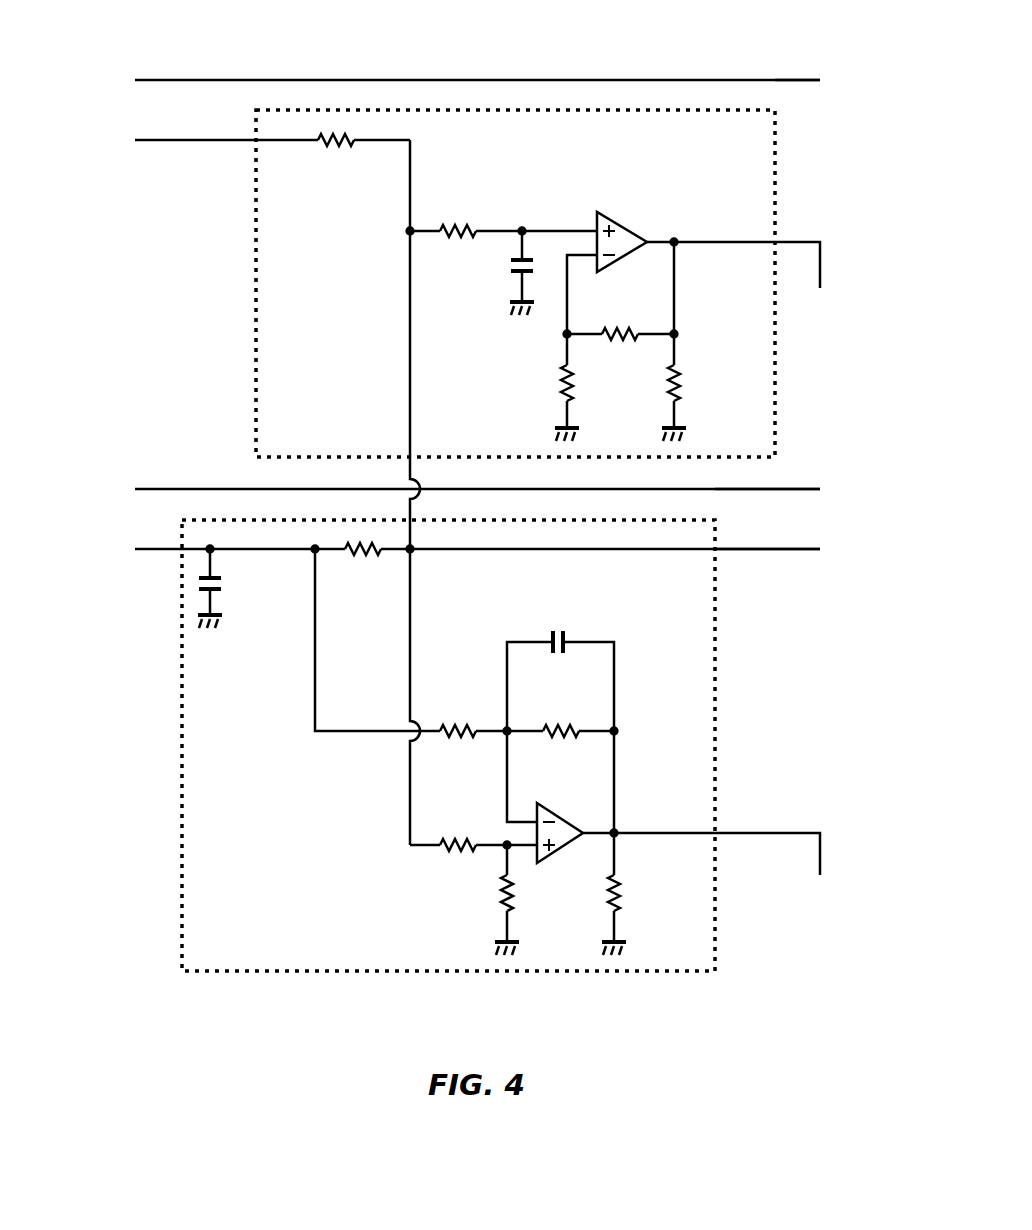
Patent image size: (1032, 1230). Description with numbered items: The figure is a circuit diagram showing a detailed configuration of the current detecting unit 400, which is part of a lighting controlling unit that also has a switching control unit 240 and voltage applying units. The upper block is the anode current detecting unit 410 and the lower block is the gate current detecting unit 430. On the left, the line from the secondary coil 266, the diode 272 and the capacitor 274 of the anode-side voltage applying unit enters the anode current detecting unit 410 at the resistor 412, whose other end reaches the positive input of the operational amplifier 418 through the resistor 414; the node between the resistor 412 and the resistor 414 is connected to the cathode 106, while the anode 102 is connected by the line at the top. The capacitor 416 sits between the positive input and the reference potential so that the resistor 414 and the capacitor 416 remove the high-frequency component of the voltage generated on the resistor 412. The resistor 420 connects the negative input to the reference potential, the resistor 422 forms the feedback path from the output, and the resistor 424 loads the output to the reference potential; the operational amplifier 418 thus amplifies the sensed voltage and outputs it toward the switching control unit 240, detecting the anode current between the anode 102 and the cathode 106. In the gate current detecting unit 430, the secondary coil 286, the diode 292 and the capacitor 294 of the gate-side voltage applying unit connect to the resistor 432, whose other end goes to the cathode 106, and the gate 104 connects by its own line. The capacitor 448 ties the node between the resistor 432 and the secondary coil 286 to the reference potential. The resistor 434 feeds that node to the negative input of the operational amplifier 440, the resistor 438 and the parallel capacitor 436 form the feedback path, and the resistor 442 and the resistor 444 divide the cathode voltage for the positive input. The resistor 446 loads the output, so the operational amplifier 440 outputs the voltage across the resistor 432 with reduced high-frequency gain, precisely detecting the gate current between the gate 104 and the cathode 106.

The current detecting unit 400 is at (927, 23).
The anode 102 is at (820, 82).
The gate 104 is at (791, 492).
The cathode 106 is at (791, 550).
The switching control unit 240 is at (819, 601).
The secondary coil 266 is at (220, 140).
The diode 272 is at (425, 80).
The capacitor 274 is at (425, 110).
The secondary coil 286 is at (425, 548).
The diode 292 is at (425, 488).
The capacitor 294 is at (425, 518).
The anode current detecting unit 410 is at (254, 323).
The resistor 412 is at (334, 152).
The resistor 414 is at (460, 222).
The capacitor 416 is at (505, 270).
The operational amplifier 418 is at (625, 222).
The resistor 420 is at (560, 381).
The resistor 422 is at (620, 348).
The resistor 424 is at (685, 388).
The gate current detecting unit 430 is at (180, 806).
The resistor 432 is at (358, 562).
The resistor 434 is at (456, 745).
The capacitor 436 is at (565, 625).
The resistor 438 is at (565, 718).
The operational amplifier 440 is at (565, 812).
The resistor 442 is at (455, 857).
The resistor 444 is at (520, 892).
The resistor 446 is at (627, 892).
The capacitor 448 is at (225, 585).